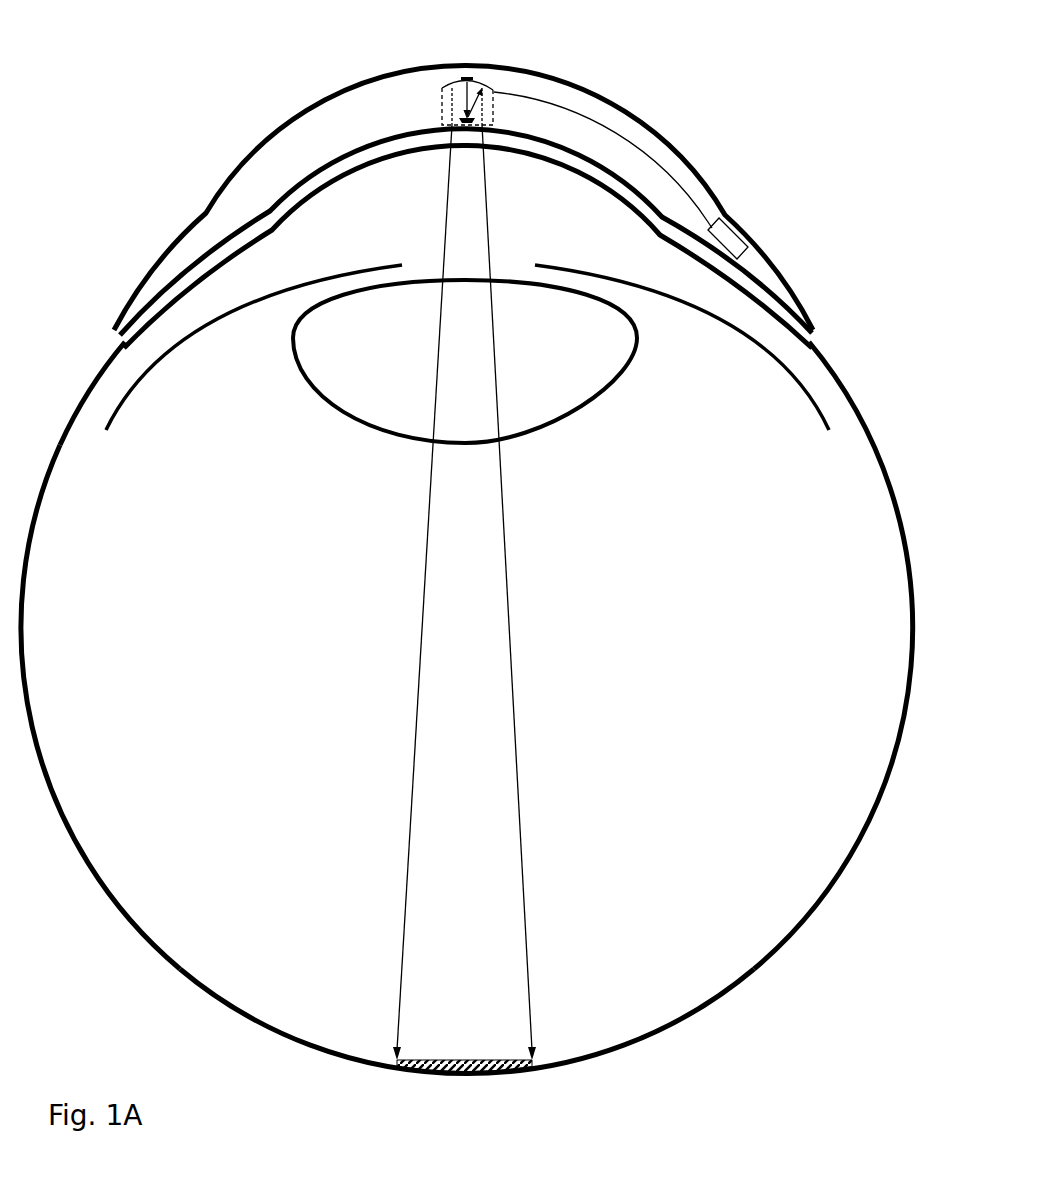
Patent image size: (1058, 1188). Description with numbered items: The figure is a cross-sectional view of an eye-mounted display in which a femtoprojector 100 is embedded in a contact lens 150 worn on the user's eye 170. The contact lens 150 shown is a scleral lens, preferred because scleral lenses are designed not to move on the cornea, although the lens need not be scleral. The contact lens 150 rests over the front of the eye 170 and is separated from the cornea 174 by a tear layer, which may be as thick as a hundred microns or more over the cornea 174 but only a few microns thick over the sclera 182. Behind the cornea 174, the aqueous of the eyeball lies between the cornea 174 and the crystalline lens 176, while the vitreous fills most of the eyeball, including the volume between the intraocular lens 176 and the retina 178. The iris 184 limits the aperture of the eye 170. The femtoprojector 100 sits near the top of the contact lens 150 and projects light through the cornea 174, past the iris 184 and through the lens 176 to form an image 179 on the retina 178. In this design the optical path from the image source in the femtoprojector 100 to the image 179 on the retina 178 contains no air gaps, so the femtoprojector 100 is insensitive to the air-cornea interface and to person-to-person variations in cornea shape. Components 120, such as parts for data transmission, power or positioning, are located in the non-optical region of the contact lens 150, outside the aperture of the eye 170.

The femtoprojector 100 is at (494, 94).
The components 120 is at (722, 233).
The contact lens 150 is at (463, 200).
The eye 170 is at (722, 511).
The cornea 174 is at (438, 212).
The crystalline lens 176 is at (415, 369).
The retina 178 is at (203, 984).
The image 179 is at (483, 1060).
The sclera 182 is at (144, 359).
The iris 184 is at (596, 272).